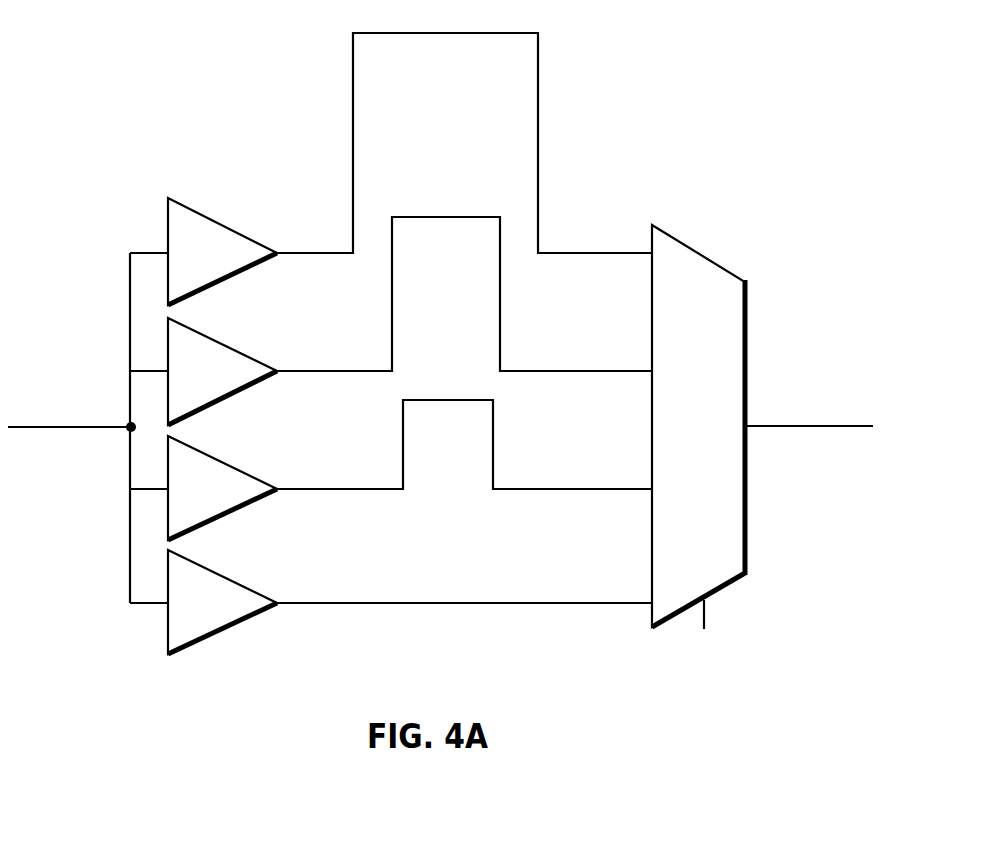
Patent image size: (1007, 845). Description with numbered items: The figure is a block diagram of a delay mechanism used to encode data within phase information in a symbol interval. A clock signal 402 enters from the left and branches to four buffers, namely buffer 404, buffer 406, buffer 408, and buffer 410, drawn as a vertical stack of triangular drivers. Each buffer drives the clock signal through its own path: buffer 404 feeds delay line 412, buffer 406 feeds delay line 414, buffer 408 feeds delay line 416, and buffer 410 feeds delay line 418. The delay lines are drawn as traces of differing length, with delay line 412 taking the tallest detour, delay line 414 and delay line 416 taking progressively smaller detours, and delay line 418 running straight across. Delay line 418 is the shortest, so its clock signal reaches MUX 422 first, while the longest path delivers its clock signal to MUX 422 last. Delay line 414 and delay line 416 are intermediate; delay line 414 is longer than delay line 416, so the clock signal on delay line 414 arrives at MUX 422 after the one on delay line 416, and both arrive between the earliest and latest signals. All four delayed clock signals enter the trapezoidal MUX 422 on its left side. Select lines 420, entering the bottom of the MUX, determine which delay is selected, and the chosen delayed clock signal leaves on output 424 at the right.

The clock 402 is at (88, 428).
The buffer 404 is at (222, 251).
The buffer 406 is at (222, 371).
The buffer 408 is at (222, 488).
The buffer 410 is at (222, 602).
The delay line 412 is at (464, 129).
The delay line 414 is at (464, 280).
The delay line 416 is at (464, 433).
The delay line 418 is at (464, 590).
The select lines 420 is at (690, 626).
The MUX 422 is at (698, 426).
The output 424 is at (816, 412).